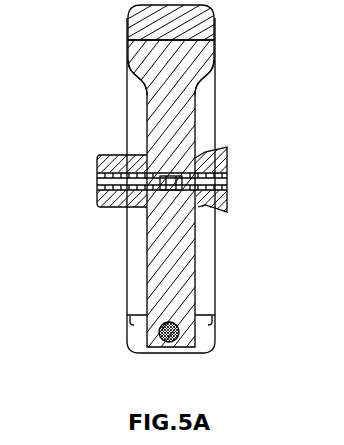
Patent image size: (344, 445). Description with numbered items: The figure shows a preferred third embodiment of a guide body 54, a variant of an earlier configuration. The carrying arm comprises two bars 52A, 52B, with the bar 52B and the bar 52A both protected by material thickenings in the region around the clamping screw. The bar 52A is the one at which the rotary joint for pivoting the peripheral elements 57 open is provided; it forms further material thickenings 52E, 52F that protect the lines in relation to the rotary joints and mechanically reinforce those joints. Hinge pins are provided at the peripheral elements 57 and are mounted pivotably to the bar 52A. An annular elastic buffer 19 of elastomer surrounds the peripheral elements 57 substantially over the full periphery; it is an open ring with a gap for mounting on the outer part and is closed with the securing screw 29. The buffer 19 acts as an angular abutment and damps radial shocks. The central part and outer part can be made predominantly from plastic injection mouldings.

The elastic buffer 19 is at (208, 10).
The bar 52A is at (203, 122).
The bar 52B is at (195, 240).
The material thickening 52E is at (132, 58).
The material thickening 52F is at (210, 58).
The guide body 54 is at (62, 272).
The peripheral element 57 is at (205, 312).
The securing screw 29 is at (176, 339).